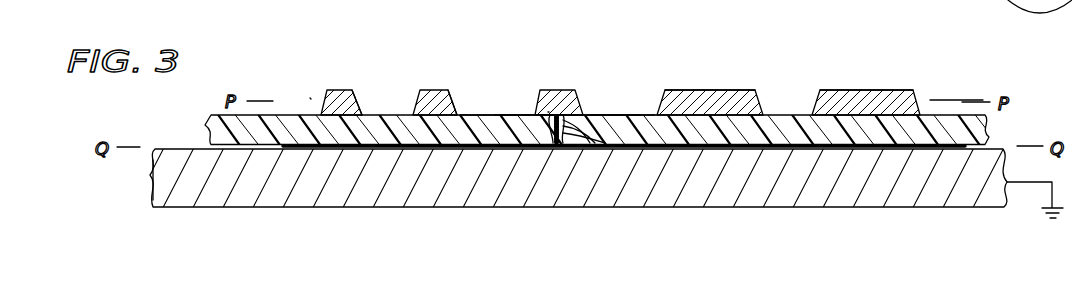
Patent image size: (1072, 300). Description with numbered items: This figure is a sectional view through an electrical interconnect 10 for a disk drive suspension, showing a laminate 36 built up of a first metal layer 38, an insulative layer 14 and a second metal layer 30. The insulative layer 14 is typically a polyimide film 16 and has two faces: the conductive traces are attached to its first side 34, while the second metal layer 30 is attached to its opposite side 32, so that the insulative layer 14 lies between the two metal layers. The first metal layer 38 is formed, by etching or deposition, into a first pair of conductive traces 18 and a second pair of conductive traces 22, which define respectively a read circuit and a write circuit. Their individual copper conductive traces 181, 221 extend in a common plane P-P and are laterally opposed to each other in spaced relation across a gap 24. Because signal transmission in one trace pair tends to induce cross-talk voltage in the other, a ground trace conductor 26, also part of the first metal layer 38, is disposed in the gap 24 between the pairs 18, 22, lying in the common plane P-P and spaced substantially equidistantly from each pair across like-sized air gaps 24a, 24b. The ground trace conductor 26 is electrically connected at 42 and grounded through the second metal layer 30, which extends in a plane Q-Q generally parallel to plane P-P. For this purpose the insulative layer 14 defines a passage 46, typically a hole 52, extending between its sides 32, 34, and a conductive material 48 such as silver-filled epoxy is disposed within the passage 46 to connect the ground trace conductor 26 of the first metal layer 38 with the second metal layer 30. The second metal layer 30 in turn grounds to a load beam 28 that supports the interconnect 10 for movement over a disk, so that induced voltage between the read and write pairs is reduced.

The electrical interconnect 10 is at (312, 97).
The insulative layer 14 is at (985, 133).
The polyimide film 16 is at (615, 117).
The first pair of conductive traces 18 is at (338, 90).
The conductive traces 181 is at (360, 102).
The second pair of conductive traces 22 is at (738, 91).
The conductive traces 221 is at (692, 91).
The gap 24 is at (543, 65).
The air gap 24a is at (473, 107).
The air gap 24b is at (640, 105).
The ground trace conductor 26 is at (548, 90).
The load beam 28 is at (763, 187).
The second metal layer 30 is at (370, 147).
The side of the insulative layer 32 is at (615, 148).
The side of the insulative layer 34 is at (511, 115).
The laminate 36 is at (120, 183).
The first metal layer 38 is at (938, 90).
The electrical connection 42 is at (572, 120).
The passage 46 is at (561, 150).
The conductive material 48 is at (548, 113).
The hole 52 is at (590, 148).